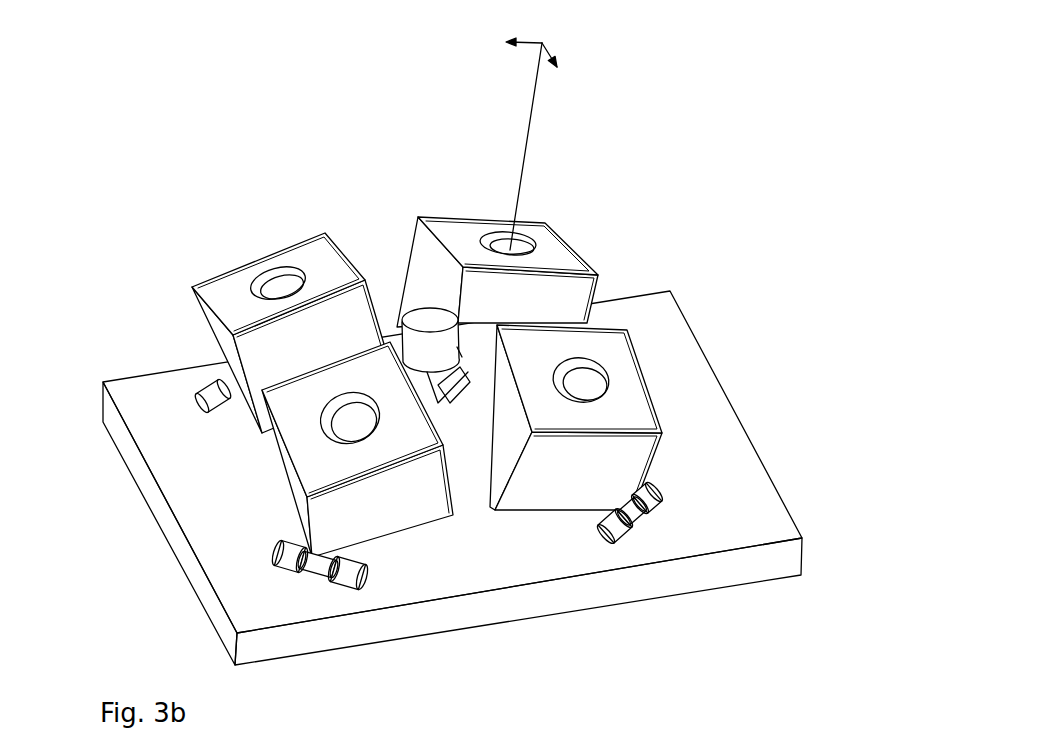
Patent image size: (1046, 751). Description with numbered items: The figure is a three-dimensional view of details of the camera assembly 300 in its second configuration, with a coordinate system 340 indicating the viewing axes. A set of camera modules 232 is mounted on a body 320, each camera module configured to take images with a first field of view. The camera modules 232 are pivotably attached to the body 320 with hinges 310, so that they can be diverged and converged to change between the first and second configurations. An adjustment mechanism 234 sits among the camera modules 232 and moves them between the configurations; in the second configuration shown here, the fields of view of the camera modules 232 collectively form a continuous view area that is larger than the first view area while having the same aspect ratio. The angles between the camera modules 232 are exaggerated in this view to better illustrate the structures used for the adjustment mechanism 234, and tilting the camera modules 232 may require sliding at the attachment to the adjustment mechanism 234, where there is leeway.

The camera module 232 is at (222, 288).
The adjustment mechanism 234 is at (448, 328).
The arrangement 300 is at (474, 438).
The hinge 310 is at (330, 578).
The body 320 is at (740, 473).
The coordinate system 340 is at (522, 43).